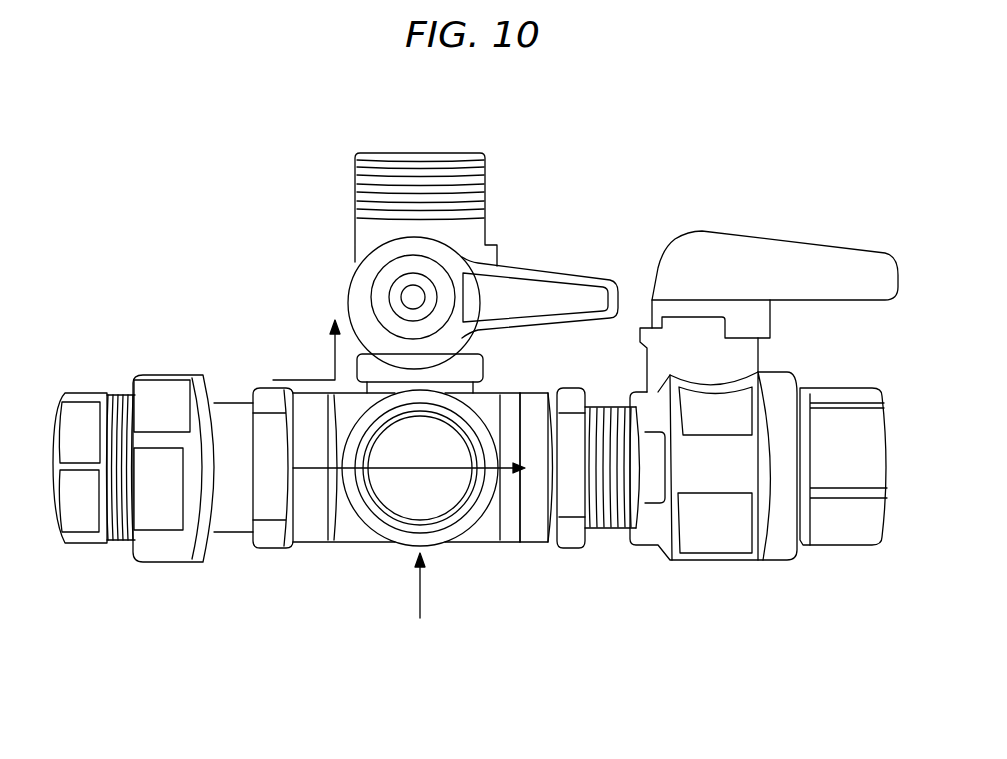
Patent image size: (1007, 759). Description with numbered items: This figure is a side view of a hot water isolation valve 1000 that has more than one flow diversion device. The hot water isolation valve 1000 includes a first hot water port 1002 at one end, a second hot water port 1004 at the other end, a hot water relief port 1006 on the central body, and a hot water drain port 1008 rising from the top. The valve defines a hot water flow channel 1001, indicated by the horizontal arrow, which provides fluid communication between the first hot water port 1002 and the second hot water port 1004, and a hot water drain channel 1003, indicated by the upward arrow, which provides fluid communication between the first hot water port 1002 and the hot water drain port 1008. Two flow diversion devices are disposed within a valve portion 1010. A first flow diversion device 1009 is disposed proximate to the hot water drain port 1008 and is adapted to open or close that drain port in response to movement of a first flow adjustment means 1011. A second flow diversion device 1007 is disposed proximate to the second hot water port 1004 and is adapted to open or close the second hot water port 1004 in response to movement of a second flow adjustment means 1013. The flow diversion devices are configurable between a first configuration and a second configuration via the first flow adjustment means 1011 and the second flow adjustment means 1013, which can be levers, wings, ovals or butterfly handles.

The hot water isolation valve 1000 is at (684, 187).
The hot water flow channel 1001 is at (421, 464).
The first hot water port 1002 is at (98, 393).
The hot water drain channel 1003 is at (330, 360).
The second hot water port 1004 is at (885, 520).
The hot water relief port 1006 is at (402, 546).
The second flow diversion device 1007 is at (757, 450).
The hot water drain port 1008 is at (455, 152).
The first flow diversion device 1009 is at (457, 340).
The valve portion 1010 is at (533, 549).
The first flow adjustment means 1011 is at (547, 290).
The second flow adjustment means 1013 is at (858, 252).